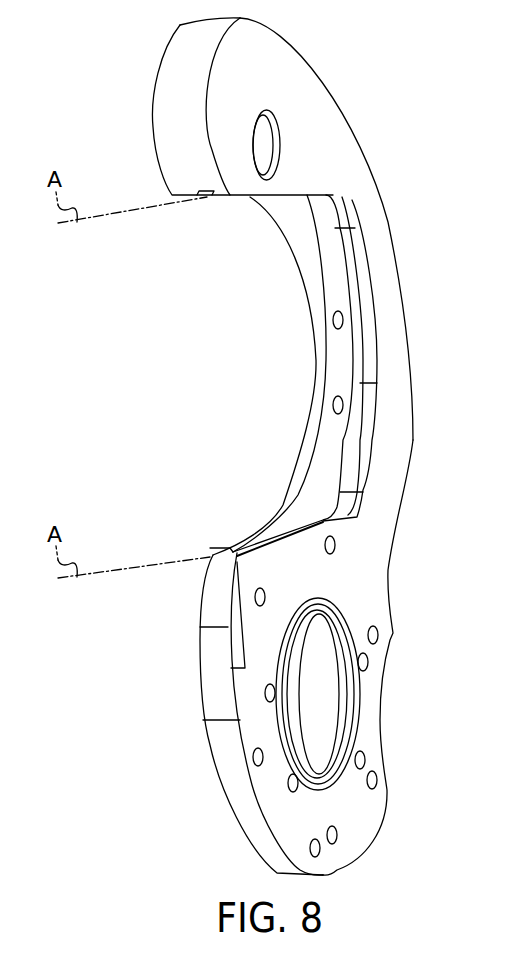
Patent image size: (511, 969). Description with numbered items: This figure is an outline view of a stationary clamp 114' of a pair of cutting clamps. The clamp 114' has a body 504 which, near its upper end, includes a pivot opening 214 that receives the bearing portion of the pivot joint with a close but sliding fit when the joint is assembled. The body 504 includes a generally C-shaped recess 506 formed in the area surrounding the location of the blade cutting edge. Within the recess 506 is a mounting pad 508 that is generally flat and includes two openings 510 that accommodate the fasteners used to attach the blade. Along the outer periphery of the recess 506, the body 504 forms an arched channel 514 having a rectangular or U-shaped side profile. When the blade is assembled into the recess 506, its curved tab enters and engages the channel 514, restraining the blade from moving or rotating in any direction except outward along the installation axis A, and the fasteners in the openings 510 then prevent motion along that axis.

The stationary clamp 114' is at (322, 229).
The pivot opening 214 is at (263, 143).
The body 504 is at (377, 593).
The recess 506 is at (344, 468).
The mounting pad 508 is at (305, 222).
The openings 510 is at (345, 320).
The arched channel 514 is at (345, 254).